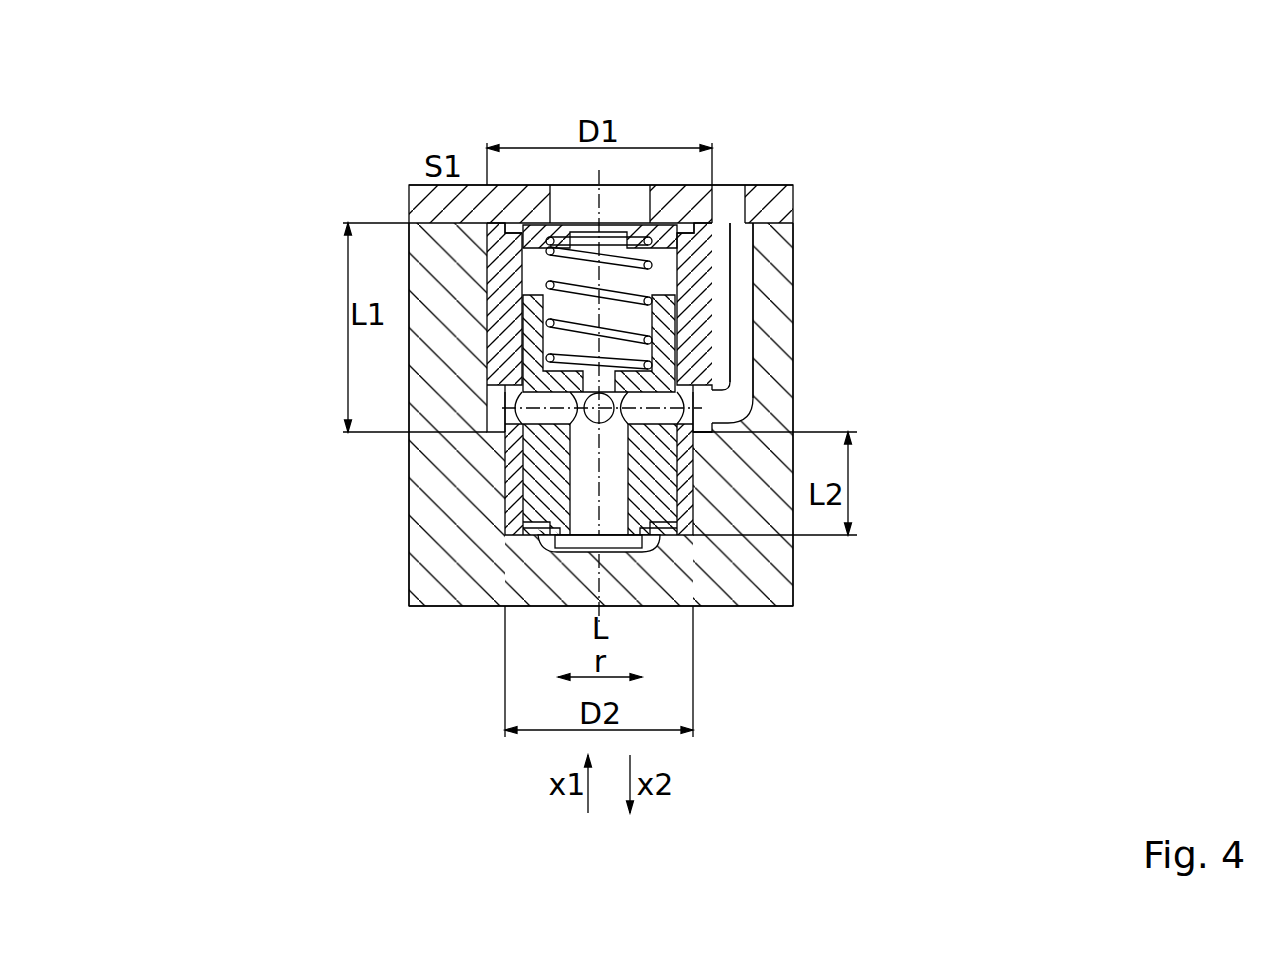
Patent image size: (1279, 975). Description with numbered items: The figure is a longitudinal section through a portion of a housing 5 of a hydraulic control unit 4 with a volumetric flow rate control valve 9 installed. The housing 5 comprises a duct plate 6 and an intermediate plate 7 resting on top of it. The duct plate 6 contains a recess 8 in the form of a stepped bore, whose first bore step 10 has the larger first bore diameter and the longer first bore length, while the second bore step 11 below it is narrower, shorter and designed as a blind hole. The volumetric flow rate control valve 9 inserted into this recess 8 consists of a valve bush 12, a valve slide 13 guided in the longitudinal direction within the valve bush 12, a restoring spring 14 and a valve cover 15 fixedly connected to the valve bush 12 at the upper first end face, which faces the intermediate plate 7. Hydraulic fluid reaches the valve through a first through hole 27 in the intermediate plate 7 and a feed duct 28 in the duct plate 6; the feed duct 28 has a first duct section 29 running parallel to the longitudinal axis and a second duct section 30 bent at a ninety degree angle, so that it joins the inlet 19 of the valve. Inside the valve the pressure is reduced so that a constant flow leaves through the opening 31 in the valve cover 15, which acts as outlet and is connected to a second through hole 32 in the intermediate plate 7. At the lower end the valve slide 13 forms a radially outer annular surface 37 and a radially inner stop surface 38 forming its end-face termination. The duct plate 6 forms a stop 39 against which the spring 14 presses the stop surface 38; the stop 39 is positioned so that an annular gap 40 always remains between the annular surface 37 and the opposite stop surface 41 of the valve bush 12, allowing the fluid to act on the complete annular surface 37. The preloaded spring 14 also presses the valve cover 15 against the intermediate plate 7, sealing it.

The hydraulic control unit 4 is at (420, 657).
The housing 5 is at (422, 613).
The duct plate 6 is at (748, 561).
The intermediate plate 7 is at (757, 205).
The recess 8 is at (497, 420).
The volumetric flow rate control valve 9 is at (485, 288).
The first bore step 10 is at (497, 270).
The second bore step 11 is at (510, 492).
The valve bush 12 is at (486, 340).
The valve slide 13 is at (510, 511).
The spring 14 is at (655, 262).
The valve cover 15 is at (667, 232).
The inlet 19 is at (744, 433).
The first through hole 27 is at (730, 203).
The feed duct 28 is at (755, 335).
The first duct section 29 is at (741, 299).
The second duct section 30 is at (730, 400).
The opening 31 is at (587, 232).
The second through hole 32 is at (623, 203).
The annular surface 37 is at (510, 530).
The stop surface 38 is at (553, 550).
The stop 39 is at (746, 607).
The annular gap 40 is at (537, 547).
The stop surface 41 is at (683, 505).